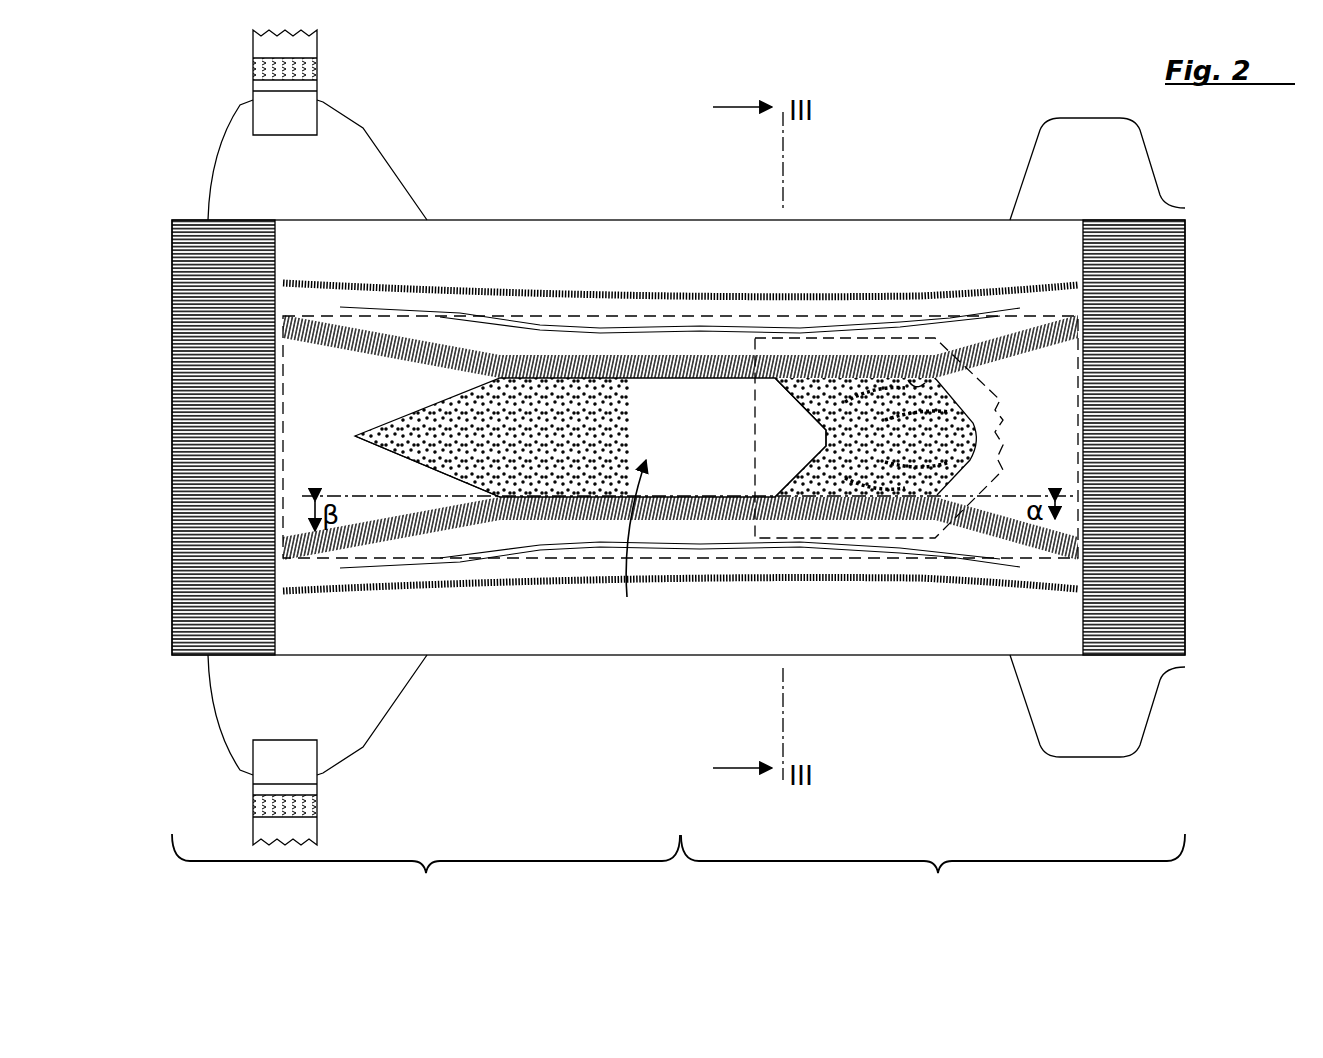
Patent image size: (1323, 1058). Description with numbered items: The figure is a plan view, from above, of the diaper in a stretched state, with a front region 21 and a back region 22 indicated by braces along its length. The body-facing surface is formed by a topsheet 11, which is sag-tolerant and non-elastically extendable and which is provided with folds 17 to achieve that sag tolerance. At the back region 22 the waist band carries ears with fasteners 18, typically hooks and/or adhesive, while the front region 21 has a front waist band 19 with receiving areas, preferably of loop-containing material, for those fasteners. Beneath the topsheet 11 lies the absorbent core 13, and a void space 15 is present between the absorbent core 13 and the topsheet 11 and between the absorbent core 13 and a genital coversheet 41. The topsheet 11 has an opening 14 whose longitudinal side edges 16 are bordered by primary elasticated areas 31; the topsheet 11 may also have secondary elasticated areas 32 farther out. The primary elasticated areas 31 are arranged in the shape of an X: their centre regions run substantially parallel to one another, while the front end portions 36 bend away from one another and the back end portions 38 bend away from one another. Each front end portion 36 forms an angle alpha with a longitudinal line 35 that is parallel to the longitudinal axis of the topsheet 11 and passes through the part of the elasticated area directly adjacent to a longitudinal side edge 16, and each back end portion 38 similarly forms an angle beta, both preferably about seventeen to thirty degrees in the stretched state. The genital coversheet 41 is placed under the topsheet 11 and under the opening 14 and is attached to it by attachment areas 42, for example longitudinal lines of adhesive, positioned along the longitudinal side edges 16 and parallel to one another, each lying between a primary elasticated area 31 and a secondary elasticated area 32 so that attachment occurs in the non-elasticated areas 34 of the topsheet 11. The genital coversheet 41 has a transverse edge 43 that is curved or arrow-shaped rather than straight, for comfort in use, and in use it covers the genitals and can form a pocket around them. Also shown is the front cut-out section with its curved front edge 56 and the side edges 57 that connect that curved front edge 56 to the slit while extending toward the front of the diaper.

The topsheet 11 is at (480, 627).
The absorbent core 13 is at (455, 410).
The opening 14 is at (425, 455).
The void space 15 is at (623, 537).
The longitudinal side edges 16 is at (688, 380).
The folds 17 is at (570, 555).
The fasteners 18 is at (266, 37).
The front waist band 19 is at (1045, 152).
The front region 21 is at (933, 874).
The back region 22 is at (426, 874).
The primary elasticated areas 31 is at (645, 360).
The secondary elasticated areas 32 is at (948, 292).
The non-elasticated areas 34 is at (860, 525).
The longitudinal line 35 is at (300, 496).
The front end portions 36 is at (1045, 345).
The back end portions 38 is at (340, 340).
The genital coversheet 41 is at (945, 470).
The attachment areas 42 is at (775, 525).
The transverse edge 43 is at (812, 420).
The front edge 56 is at (955, 402).
The side edges 57 is at (920, 385).